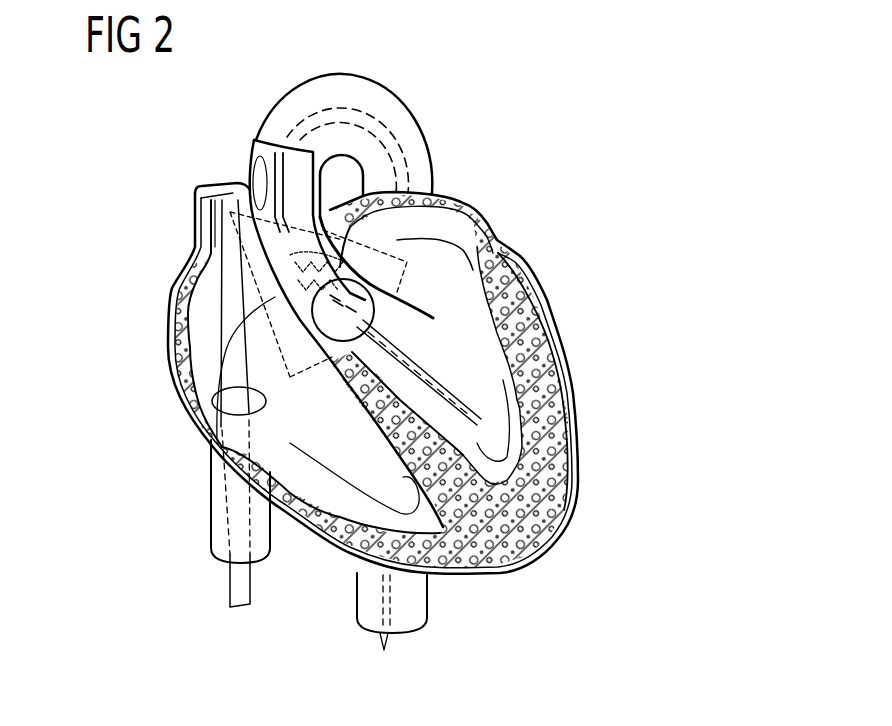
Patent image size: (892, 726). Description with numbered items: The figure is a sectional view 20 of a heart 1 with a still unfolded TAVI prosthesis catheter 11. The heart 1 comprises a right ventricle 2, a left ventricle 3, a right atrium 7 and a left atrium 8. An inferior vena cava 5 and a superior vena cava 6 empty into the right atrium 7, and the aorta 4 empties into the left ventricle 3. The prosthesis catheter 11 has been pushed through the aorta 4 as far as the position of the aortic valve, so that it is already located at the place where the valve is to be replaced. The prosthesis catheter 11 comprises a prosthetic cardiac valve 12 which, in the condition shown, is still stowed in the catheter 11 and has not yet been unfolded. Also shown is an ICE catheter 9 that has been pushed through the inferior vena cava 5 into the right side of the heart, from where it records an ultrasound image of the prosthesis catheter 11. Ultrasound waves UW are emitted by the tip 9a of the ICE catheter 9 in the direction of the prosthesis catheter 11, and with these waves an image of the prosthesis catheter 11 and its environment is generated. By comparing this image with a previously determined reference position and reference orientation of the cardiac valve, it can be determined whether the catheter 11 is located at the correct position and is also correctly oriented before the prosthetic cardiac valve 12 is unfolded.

The heart 1 is at (610, 454).
The right ventricle 2 is at (383, 527).
The left ventricle 3 is at (483, 375).
The aorta 4 is at (384, 104).
The inferior vena cava 5 is at (210, 508).
The superior vena cava 6 is at (195, 191).
The right atrium 7 is at (172, 338).
The left atrium 8 is at (438, 211).
The ICE catheter 9 is at (235, 590).
The tip 9a is at (243, 190).
The prosthesis catheter 11 is at (393, 297).
The prosthetic cardiac valve 12 is at (194, 407).
The sectional view 20 is at (605, 135).
The ultrasound waves UW is at (248, 137).